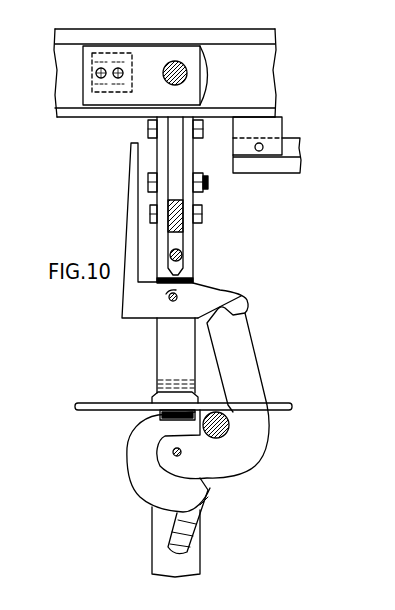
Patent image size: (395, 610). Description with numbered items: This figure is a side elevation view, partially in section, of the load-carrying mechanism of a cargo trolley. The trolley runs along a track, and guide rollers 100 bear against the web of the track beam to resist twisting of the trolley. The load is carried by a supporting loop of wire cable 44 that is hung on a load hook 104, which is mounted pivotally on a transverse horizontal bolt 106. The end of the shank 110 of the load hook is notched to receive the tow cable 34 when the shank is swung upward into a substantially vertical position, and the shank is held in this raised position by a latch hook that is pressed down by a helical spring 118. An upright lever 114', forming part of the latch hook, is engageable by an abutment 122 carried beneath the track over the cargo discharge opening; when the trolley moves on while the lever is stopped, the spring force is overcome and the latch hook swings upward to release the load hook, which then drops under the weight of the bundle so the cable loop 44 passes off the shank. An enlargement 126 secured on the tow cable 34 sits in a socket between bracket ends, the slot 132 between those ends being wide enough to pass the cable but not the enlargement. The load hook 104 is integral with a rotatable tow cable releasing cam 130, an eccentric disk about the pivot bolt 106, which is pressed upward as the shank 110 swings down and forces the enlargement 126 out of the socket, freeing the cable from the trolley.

The guide rollers 100 is at (92, 62).
The upright lever 114' is at (133, 230).
The abutment 122 is at (242, 173).
The helical spring 118 is at (167, 300).
The shank 110 is at (235, 370).
The enlargement 126 is at (157, 385).
The slot 132 is at (200, 402).
The tow cable 34 is at (283, 410).
The tow cable releasing cam 130 is at (132, 460).
The load hook 104 is at (248, 457).
The bolt 106 is at (174, 455).
The cable loop 44 is at (200, 512).